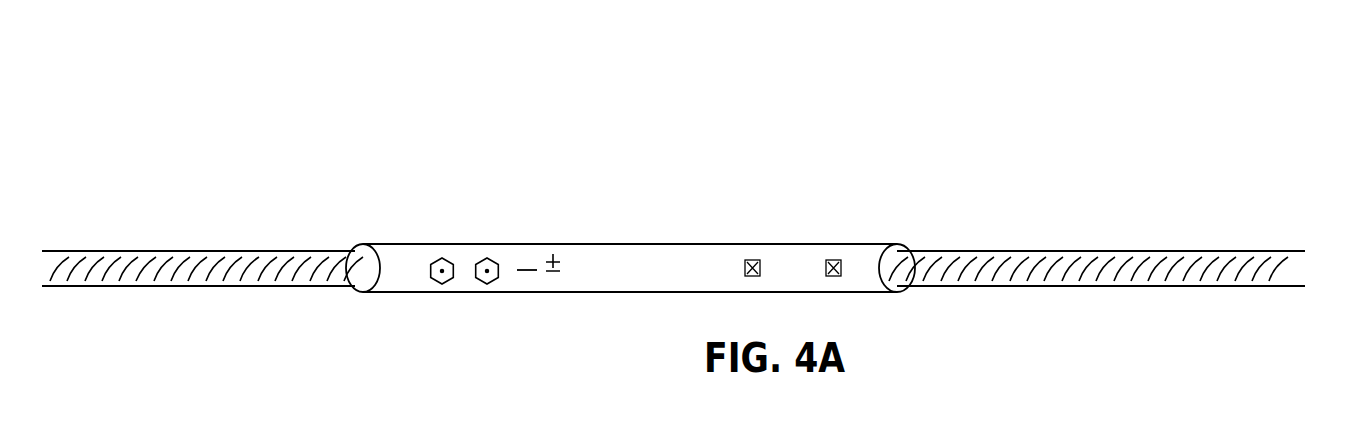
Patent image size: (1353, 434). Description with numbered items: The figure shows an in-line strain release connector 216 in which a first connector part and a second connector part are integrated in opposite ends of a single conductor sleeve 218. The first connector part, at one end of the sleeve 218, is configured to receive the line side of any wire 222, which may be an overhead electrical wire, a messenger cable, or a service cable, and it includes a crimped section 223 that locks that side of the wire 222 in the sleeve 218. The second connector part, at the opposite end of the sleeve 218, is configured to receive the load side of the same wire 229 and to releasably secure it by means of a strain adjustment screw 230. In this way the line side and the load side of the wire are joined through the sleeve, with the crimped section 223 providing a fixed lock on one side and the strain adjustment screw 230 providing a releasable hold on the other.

The in-line connector 216 is at (878, 127).
The conductor sleeve 218 is at (561, 208).
The wire 222 is at (1107, 268).
The crimped section 223 is at (834, 264).
The load side of the wire 229 is at (187, 268).
The strain adjustment screw 230 is at (444, 283).